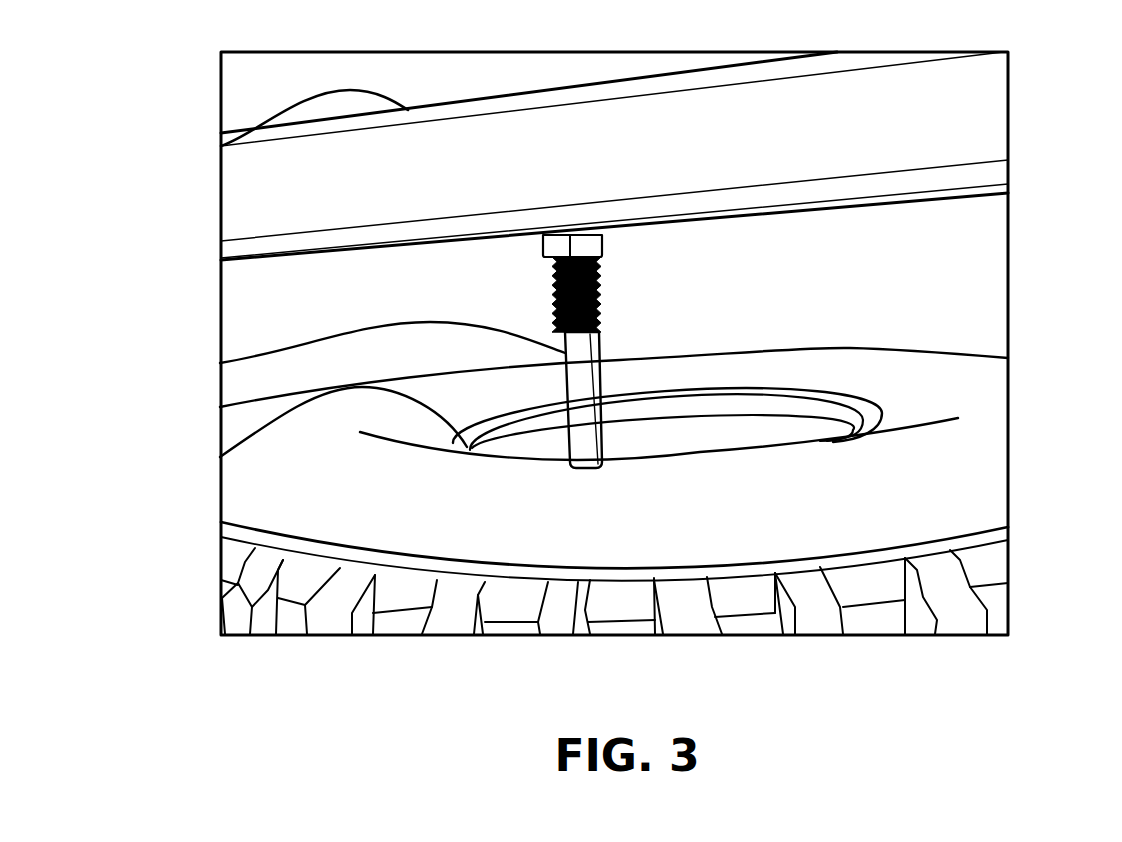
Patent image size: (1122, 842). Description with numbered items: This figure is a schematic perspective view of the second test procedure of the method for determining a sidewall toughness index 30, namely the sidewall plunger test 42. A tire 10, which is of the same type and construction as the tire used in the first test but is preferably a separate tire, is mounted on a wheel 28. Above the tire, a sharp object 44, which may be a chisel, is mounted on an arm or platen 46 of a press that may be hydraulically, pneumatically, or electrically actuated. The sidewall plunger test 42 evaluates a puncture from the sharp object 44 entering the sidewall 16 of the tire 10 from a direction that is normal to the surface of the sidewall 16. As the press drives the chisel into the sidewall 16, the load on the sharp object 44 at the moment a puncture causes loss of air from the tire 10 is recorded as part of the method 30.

The tire 10 is at (1019, 393).
The tire sidewall 16 is at (935, 368).
The wheel 28 is at (221, 407).
The method for determining a sidewall toughness index 30 is at (1023, 167).
The sidewall plunger test 42 is at (503, 487).
The sharp object 44 is at (573, 358).
The arm or platen 46 is at (221, 146).